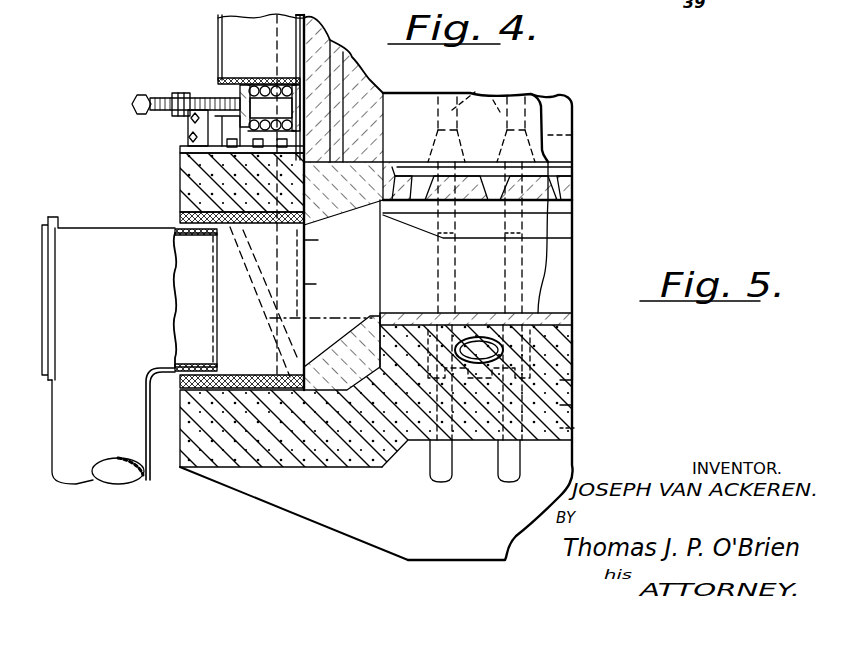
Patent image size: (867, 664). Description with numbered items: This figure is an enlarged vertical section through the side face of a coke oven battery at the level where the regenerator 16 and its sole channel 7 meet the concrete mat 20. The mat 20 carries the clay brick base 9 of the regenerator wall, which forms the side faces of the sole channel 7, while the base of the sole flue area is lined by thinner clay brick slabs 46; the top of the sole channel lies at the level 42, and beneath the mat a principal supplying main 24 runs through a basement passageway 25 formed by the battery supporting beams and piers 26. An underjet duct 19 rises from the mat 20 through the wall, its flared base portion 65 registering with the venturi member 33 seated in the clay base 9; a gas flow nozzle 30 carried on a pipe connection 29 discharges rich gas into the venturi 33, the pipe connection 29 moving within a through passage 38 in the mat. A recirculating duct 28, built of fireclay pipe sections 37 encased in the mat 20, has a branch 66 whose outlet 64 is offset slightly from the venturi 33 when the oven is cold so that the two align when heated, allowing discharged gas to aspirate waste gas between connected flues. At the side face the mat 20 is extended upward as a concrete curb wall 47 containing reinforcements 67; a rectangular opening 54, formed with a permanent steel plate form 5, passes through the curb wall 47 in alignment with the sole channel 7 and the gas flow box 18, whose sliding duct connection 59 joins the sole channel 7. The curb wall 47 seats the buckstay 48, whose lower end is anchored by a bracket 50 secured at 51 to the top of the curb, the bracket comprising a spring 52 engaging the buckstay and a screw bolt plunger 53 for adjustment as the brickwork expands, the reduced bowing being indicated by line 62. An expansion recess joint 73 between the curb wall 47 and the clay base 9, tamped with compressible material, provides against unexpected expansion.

The permanent steel plate form 5 is at (262, 225).
The sole channel 7 is at (572, 262).
The clay brick base 9 is at (534, 237).
The cross regenerator 16 is at (572, 97).
The gas flow box 18 is at (76, 412).
The duct 19 is at (470, 100).
The concrete mat 20 is at (575, 405).
The principal supplying main 24 is at (305, 186).
The basement passageway 25 is at (346, 558).
The battery supporting beams and piers 26 is at (314, 504).
The recirculating duct 28 is at (479, 357).
The pipe connection 29 is at (510, 468).
The gas flow nozzle 30 is at (350, 332).
The venturi member 33 is at (520, 312).
The fireclay pipe section 37 is at (572, 380).
The through passage 38 is at (580, 430).
The level of the tops of the sole flues 42 is at (380, 154).
The clay brick slab 46 is at (412, 320).
The curb wall 47 is at (185, 190).
The buckstay 48 is at (220, 56).
The bracket 50 is at (190, 122).
The securing point 51 is at (213, 151).
The spring 52 is at (272, 84).
The screw bolt plunger 53 is at (240, 93).
The rectangular opening 54 is at (322, 242).
The sliding duct connection 59 is at (174, 372).
The bowing line 62 is at (306, 15).
The outlet 64 is at (325, 341).
The base portion of riser 65 is at (256, 6).
The branch 66 is at (502, 357).
The reinforcement 67 is at (281, 440).
The expansion recess joint 73 is at (322, 284).